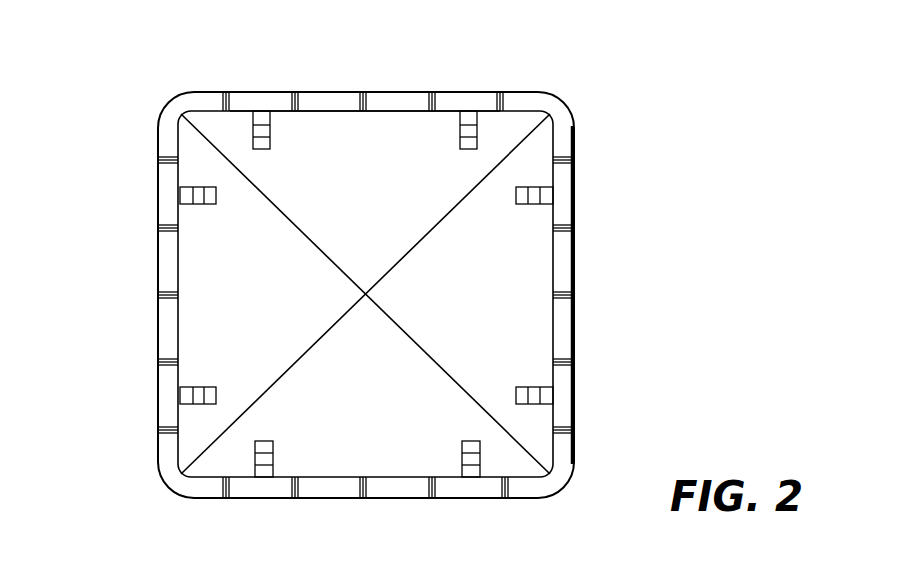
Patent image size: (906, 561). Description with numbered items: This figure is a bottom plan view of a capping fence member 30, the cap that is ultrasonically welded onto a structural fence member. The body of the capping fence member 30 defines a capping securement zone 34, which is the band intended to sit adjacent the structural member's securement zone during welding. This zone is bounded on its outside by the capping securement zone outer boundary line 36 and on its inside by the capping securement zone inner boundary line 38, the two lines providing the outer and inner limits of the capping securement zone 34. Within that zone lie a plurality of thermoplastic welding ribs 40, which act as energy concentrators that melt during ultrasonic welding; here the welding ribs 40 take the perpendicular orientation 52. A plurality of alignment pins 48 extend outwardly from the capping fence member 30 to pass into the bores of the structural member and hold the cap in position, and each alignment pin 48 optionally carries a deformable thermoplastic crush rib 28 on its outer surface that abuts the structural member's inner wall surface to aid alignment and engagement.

The crush rib 28 is at (180, 397).
The capping fence member 30 is at (176, 104).
The capping securement zone 34 is at (567, 128).
The capping securement zone outer boundary line 36 is at (397, 93).
The capping securement zone inner boundary line 38 is at (396, 112).
The welding ribs 40 is at (178, 228).
The alignment pins 48 is at (263, 150).
The perpendicular orientation 52 is at (363, 93).